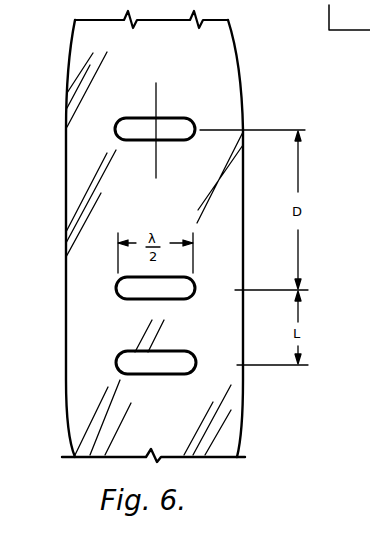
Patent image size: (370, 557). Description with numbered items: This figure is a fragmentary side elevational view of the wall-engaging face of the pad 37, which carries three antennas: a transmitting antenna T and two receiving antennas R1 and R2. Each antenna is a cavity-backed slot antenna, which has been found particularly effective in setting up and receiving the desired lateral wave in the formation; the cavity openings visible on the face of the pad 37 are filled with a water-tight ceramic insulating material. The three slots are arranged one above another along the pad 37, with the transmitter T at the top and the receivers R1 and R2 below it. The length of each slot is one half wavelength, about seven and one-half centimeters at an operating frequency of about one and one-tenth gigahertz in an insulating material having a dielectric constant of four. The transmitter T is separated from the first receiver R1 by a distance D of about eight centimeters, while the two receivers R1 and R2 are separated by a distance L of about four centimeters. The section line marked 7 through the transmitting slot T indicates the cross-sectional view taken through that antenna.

The pad 37 is at (244, 411).
The transmitting antenna T is at (186, 129).
The first receiving antenna R1 is at (188, 289).
The second receiving antenna R2 is at (186, 364).
The section line 7- 7 is at (186, 175).